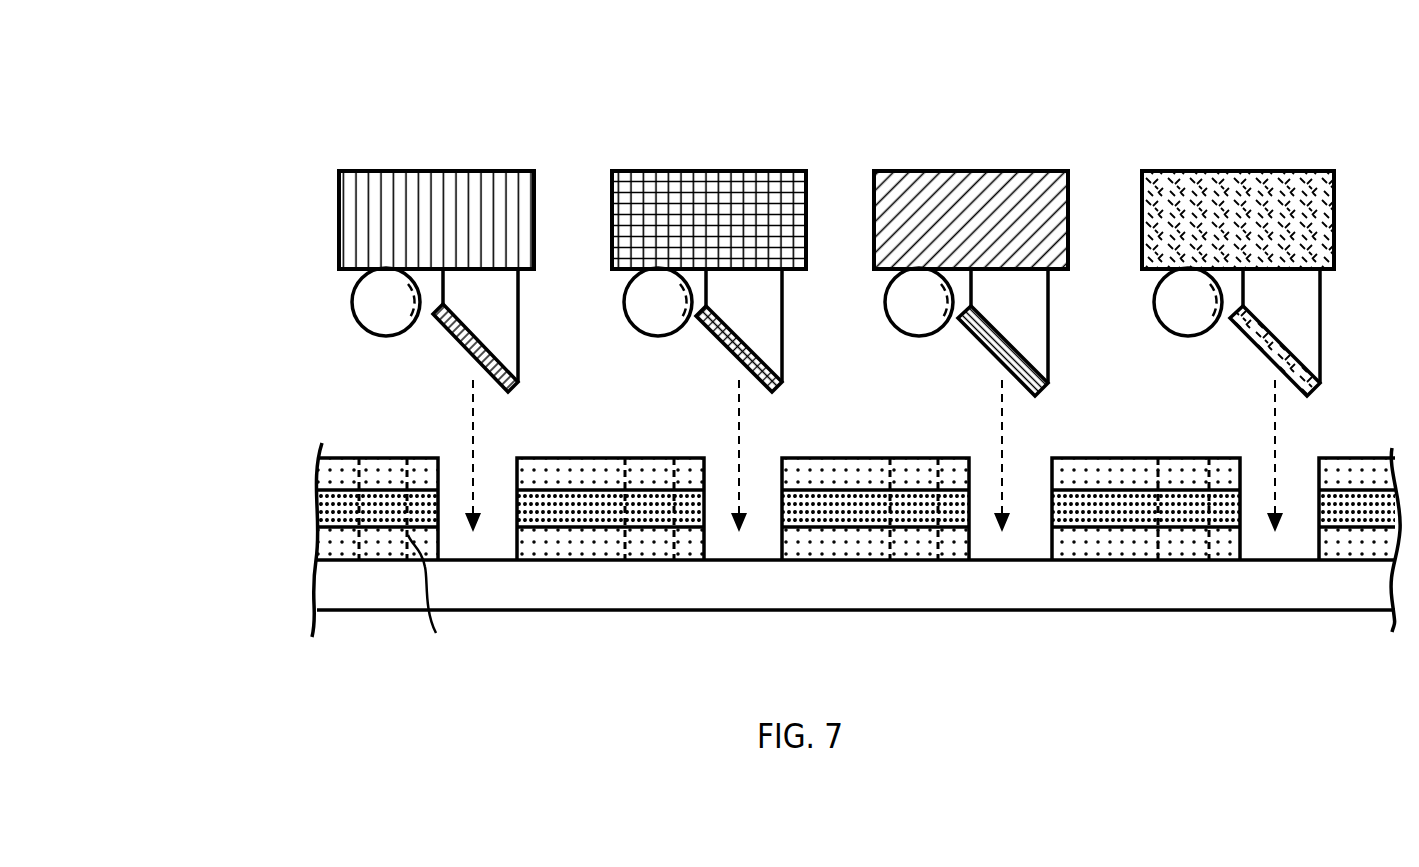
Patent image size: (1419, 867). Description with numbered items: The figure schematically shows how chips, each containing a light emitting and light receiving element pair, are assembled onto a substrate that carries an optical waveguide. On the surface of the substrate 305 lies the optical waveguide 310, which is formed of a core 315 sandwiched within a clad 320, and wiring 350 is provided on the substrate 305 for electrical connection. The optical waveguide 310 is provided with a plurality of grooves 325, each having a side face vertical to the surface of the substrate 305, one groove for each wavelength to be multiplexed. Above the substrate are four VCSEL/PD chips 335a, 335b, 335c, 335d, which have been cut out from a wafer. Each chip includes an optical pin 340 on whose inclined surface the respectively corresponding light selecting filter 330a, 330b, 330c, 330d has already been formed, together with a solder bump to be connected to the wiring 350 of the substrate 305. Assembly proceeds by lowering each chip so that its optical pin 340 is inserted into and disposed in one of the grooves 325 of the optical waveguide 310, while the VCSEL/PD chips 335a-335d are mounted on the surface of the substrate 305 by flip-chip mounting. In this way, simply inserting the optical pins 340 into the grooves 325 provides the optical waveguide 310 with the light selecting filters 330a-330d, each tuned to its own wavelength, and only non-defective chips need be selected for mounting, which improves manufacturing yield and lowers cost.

The substrate 305 is at (327, 590).
The optical waveguide 310 is at (187, 430).
The core 315 is at (320, 515).
The clad 320 is at (320, 470).
The groove 325 is at (499, 466).
The light selecting filter 330a is at (483, 362).
The light selecting filter 330b is at (737, 362).
The light selecting filter 330c is at (1000, 360).
The light selecting filter 330d is at (1268, 362).
The VCSEL/PD chip 335a is at (462, 170).
The VCSEL/PD chip 335b is at (740, 170).
The VCSEL/PD chip 335c is at (997, 170).
The VCSEL/PD chip 335d is at (1268, 170).
The optical pin 340 is at (518, 340).
The wiring 350 is at (454, 613).